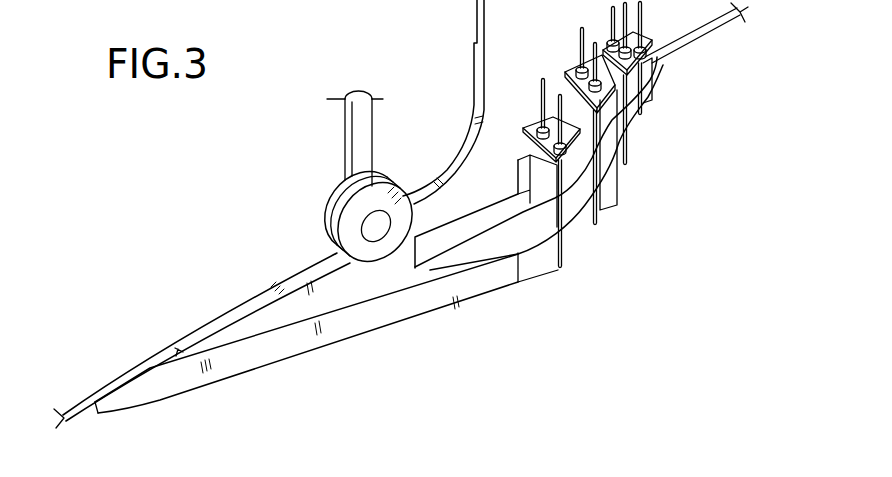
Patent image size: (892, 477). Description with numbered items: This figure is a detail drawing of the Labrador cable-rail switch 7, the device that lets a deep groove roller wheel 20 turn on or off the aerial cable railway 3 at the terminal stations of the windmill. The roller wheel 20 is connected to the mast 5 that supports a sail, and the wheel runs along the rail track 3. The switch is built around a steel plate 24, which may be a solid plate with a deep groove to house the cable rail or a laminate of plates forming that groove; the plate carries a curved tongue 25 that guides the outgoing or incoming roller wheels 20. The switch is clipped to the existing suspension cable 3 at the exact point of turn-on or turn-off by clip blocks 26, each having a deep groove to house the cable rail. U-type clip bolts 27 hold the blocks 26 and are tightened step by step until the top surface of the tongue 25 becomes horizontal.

The rail track 3 is at (102, 392).
The mast 5 is at (355, 142).
The cable-rail switch 7 is at (357, 277).
The deep groove roller wheel 20 is at (342, 193).
The steel plate 24 is at (237, 357).
The curved tongue 25 is at (475, 95).
The clip block 26 is at (533, 258).
The clip bolts 27 is at (560, 240).